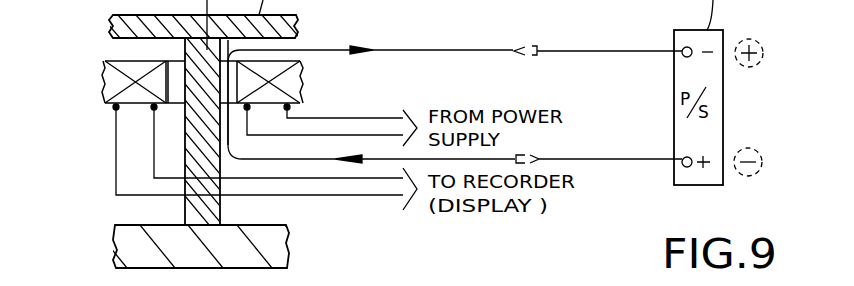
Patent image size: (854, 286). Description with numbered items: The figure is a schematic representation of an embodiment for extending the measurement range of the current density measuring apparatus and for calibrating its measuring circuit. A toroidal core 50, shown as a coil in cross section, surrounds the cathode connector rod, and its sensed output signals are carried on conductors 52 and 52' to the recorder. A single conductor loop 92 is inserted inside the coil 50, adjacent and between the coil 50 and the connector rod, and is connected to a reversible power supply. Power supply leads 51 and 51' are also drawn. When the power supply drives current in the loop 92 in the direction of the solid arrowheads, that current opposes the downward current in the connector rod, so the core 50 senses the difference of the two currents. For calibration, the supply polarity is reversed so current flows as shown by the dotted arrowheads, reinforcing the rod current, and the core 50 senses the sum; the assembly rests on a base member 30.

The base support member 30 is at (128, 238).
The toroidal core 50 is at (118, 70).
The power supply lead 51 is at (325, 111).
The power supply lead 51' is at (345, 91).
The conductor 52 is at (221, 151).
The conductor 52' is at (221, 142).
The single conductor loop 92 is at (592, 51).